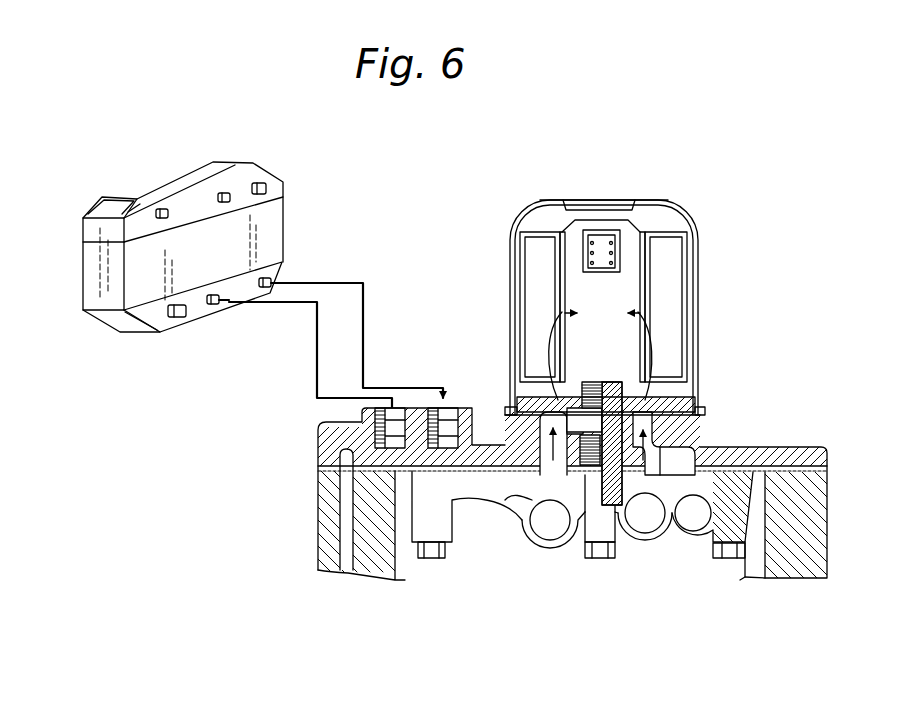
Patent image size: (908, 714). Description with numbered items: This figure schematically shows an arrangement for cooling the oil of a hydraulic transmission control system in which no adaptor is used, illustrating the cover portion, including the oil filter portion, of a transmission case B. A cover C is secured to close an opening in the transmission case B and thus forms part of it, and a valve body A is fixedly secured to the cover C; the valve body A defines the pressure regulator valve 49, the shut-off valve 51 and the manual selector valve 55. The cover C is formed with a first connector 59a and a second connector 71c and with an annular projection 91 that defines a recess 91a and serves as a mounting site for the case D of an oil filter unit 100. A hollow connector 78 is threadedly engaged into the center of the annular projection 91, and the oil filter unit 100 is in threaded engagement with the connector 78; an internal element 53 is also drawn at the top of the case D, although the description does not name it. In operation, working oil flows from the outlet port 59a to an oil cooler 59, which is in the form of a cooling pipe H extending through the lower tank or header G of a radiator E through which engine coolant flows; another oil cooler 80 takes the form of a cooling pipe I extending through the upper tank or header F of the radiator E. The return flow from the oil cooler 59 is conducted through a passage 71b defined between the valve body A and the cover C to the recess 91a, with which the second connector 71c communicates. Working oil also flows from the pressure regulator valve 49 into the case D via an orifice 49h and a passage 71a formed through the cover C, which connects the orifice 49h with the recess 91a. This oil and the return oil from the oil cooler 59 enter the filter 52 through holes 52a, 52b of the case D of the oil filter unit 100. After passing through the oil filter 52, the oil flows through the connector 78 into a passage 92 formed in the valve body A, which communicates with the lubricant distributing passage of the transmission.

The oil cooler 80 is at (207, 194).
The upper tank or header F is at (105, 205).
The radiator E is at (141, 183).
The cooling pipe I is at (163, 209).
The lower tank or header G is at (155, 318).
The cooling pipe H is at (212, 305).
The oil cooler 59 is at (253, 304).
The first connector (outlet port) 59a is at (393, 420).
The second connector 71c is at (443, 425).
The transmission case B is at (316, 525).
The cover C is at (830, 447).
The orifice 49h is at (740, 470).
The passage 71b is at (485, 528).
The manual selector valve 55 is at (540, 528).
The hollow connector 78 is at (572, 522).
The passage 92 is at (622, 545).
The valve body A is at (582, 561).
The shut-off valve 51 is at (652, 527).
The pressure regulator valve 49 is at (697, 527).
The recess 91a is at (541, 427).
The hole 52a is at (560, 412).
The passage 71a is at (700, 470).
The annular projection 91 is at (692, 442).
The oil filter unit 100 is at (501, 256).
The case D is at (570, 194).
The filter 52 is at (652, 285).
The plunger core 53 is at (614, 246).
The hole 52b is at (622, 415).